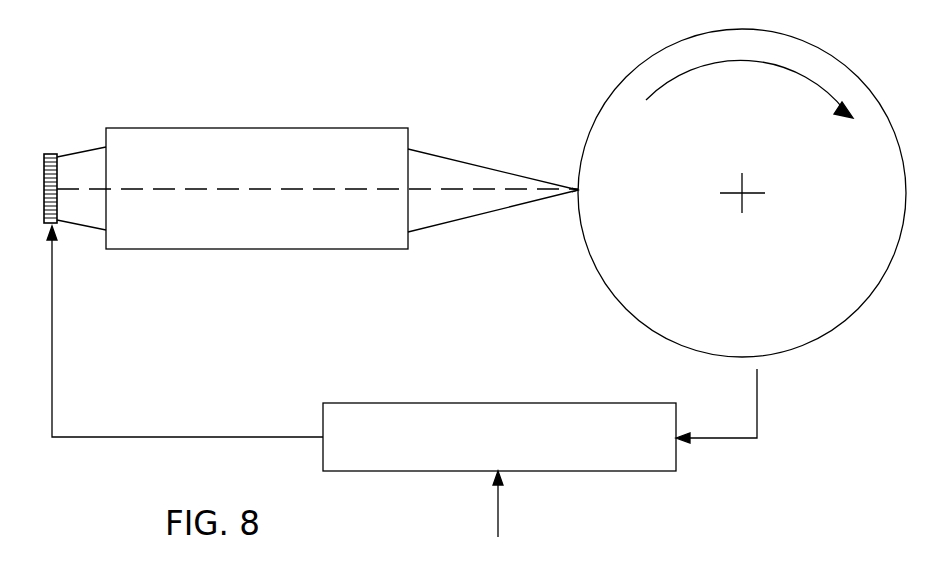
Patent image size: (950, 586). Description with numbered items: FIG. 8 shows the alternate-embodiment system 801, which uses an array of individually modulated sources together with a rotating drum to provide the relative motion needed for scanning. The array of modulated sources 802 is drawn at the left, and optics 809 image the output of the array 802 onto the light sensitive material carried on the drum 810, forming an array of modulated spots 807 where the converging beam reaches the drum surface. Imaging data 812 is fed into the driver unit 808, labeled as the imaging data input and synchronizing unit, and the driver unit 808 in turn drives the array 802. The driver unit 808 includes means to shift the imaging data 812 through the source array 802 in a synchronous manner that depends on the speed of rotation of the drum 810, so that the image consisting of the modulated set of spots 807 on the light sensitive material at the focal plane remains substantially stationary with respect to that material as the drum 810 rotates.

The system 801 is at (458, 74).
The array of modulated sources 802 is at (50, 154).
The array of modulated spots 807 is at (576, 206).
The driver unit 808 is at (400, 403).
The optics 809 is at (263, 128).
The drum 810 is at (700, 33).
The imaging data 812 is at (498, 517).